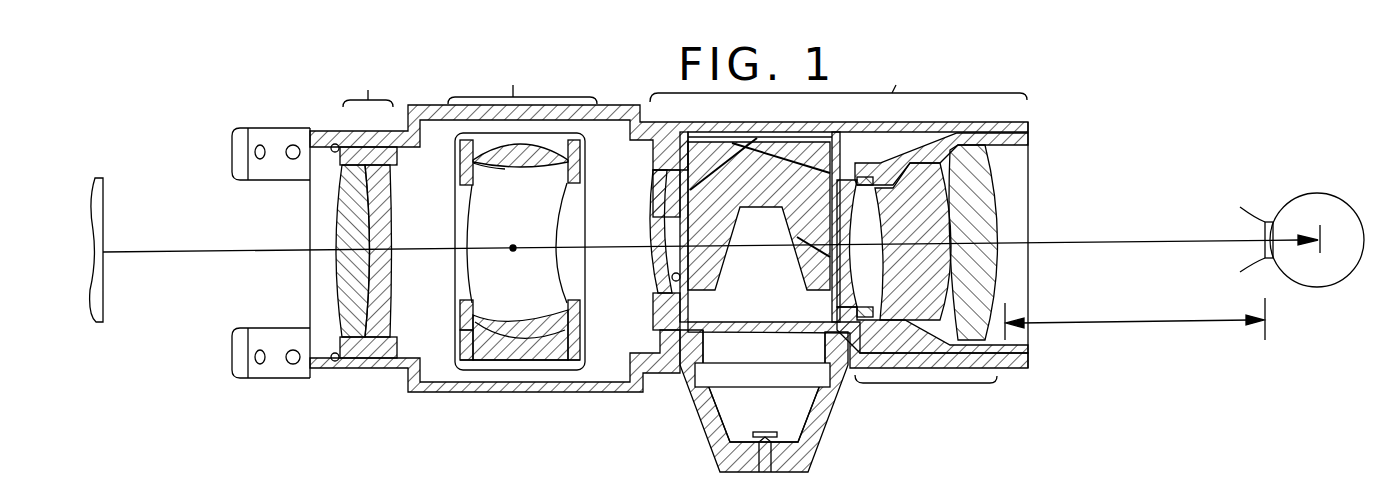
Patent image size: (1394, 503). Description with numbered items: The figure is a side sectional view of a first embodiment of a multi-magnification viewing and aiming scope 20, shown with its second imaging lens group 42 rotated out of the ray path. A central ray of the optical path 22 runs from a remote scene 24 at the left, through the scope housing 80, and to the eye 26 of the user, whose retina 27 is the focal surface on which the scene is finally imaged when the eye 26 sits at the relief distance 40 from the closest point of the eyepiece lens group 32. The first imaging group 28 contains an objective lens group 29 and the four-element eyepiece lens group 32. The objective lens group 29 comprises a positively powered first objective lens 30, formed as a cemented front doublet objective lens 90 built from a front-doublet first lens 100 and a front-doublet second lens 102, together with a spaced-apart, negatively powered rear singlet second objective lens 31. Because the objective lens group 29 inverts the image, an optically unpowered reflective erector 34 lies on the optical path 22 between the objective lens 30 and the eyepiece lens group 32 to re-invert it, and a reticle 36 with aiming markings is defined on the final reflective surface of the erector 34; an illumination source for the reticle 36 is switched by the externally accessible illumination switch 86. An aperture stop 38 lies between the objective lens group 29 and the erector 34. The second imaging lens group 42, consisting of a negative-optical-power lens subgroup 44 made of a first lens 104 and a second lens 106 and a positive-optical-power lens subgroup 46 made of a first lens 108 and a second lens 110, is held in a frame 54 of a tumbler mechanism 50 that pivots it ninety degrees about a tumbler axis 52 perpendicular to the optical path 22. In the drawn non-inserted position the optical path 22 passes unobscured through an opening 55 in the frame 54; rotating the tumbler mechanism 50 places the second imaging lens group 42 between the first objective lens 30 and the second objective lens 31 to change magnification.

The viewing and aiming scope 20 is at (675, 108).
The optical path 22 is at (216, 251).
The remote scene 24 is at (107, 200).
The eye 26 is at (1305, 247).
The retina 27 is at (1322, 232).
The first imaging group 28 is at (685, 202).
The objective lens group 29 is at (335, 157).
The first objective lens 30 is at (351, 251).
The second objective lens 31 is at (653, 282).
The eyepiece lens group 32 is at (930, 385).
The erector 34 is at (772, 292).
The reticle 36 is at (798, 262).
The aperture stop 38 is at (677, 282).
The relief distance 40 is at (1142, 322).
The second imaging lens group 42 is at (514, 243).
The negative-optical-power lens subgroup 44 is at (520, 308).
The positive-optical-power lens subgroup 46 is at (516, 168).
The tumbler mechanism 50 is at (548, 380).
The tumbler axis 52 is at (513, 248).
The frame 54 is at (458, 216).
The opening 55 is at (474, 300).
The scope housing 80 is at (1033, 377).
The illumination switch 86 is at (793, 474).
The cemented front doublet objective lens 90 is at (372, 340).
The front-doublet first lens 100 is at (342, 243).
The front-doublet second lens 102 is at (384, 320).
The negative-power subgroup-doublet first lens 104 is at (473, 345).
The negative-power-subgroup-doublet second lens 106 is at (515, 322).
The positive-power-subgroup-doublet first lens 108 is at (493, 168).
The positive-power-subgroup-doublet second lens 110 is at (465, 145).